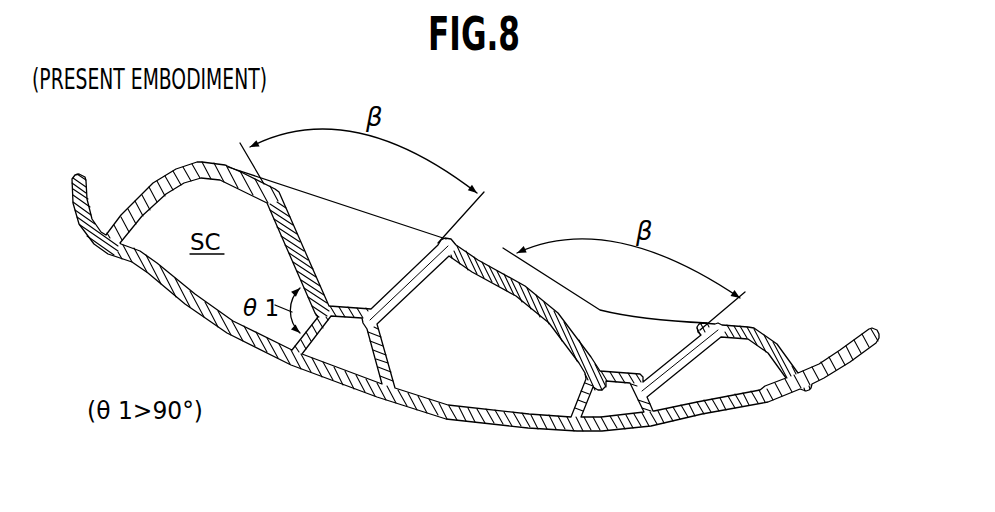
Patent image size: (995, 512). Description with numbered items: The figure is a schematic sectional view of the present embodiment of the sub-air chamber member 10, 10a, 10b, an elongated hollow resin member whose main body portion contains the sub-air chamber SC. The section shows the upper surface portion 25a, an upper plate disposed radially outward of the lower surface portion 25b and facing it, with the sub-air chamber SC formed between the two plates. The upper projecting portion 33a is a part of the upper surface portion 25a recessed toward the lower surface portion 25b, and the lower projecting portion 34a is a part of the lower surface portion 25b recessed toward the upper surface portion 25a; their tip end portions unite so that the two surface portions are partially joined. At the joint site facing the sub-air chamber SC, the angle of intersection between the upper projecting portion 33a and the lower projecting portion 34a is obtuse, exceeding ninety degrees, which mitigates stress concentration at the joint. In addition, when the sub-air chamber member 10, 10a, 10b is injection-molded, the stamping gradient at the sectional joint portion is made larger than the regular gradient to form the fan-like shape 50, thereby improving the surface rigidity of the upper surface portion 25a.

The sub-air chamber member 10 is at (475, 284).
The sub-air chamber member 10a is at (475, 284).
The sub-air chamber member 10b is at (600, 193).
The upper surface portion 25a is at (480, 252).
The lower surface portion 25b is at (443, 419).
The upper projecting portion 33a is at (284, 243).
The lower projecting portion 34a is at (325, 345).
The fan-like shape 50 is at (353, 235).